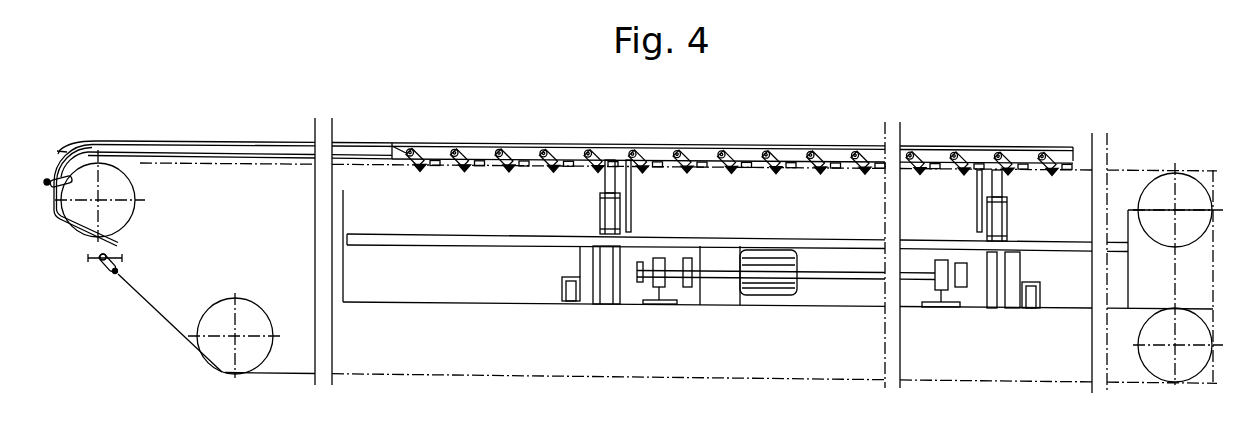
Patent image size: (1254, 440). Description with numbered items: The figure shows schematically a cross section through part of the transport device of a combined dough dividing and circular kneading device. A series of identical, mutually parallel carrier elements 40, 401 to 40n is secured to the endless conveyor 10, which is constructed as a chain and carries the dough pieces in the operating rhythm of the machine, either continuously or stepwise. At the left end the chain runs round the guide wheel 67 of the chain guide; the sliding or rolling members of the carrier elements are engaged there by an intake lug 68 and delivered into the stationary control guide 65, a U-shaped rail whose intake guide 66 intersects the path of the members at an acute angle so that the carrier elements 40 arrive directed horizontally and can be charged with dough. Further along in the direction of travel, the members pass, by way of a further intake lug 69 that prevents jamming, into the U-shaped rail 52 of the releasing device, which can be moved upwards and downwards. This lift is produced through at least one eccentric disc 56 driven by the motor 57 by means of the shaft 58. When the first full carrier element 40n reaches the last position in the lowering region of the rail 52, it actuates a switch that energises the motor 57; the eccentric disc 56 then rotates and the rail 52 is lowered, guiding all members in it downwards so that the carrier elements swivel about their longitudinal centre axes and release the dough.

The endless conveyor 10 is at (177, 332).
The carrier element 40 is at (97, 260).
The carrier element 401 is at (435, 160).
The carrier element 40n is at (1062, 168).
The U-shaped rail 52 is at (775, 145).
The eccentric disc 56 is at (633, 253).
The motor 57 is at (763, 285).
The shaft 58 is at (867, 280).
The stationary control guide 65 is at (273, 142).
The intake guide 66 is at (63, 222).
The guide wheel 67 is at (125, 187).
The intake lug 68 is at (59, 150).
The intake lug 69 is at (395, 157).